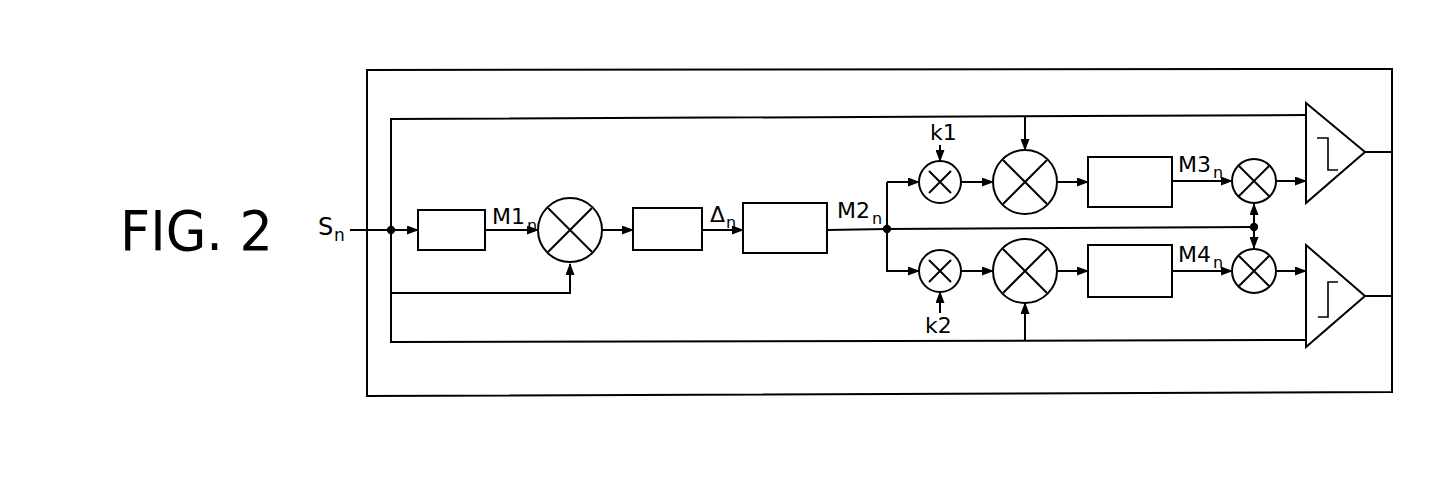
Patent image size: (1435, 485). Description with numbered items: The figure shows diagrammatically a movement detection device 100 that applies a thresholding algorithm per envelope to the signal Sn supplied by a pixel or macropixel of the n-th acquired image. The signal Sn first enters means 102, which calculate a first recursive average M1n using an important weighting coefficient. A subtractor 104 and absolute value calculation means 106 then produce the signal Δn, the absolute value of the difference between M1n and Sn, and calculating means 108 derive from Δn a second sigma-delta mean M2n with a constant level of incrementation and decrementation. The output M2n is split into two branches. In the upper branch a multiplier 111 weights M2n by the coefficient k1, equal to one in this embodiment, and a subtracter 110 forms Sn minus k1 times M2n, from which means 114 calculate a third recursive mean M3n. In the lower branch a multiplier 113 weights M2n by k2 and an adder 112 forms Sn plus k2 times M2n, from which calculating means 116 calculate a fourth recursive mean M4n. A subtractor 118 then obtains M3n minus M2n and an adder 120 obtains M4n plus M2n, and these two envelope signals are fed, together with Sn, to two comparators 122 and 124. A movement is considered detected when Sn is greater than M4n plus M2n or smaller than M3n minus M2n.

The movement detection device 100 is at (1153, 380).
The means for calculating first recursive average 102 is at (465, 222).
The subtractor 104 is at (570, 207).
The absolute value calculation means 106 is at (670, 243).
The calculating means 108 is at (778, 243).
The subtracter 110 is at (1047, 170).
The multiplier 111 is at (920, 170).
The adder 112 is at (1047, 283).
The multiplier 113 is at (920, 283).
The means of calculating third recursive mean 114 is at (1133, 170).
The calculating means 116 is at (1138, 283).
The subtractor 118 is at (1258, 170).
The adder 120 is at (1256, 293).
The comparator 122 is at (1345, 150).
The comparator 124 is at (1337, 307).